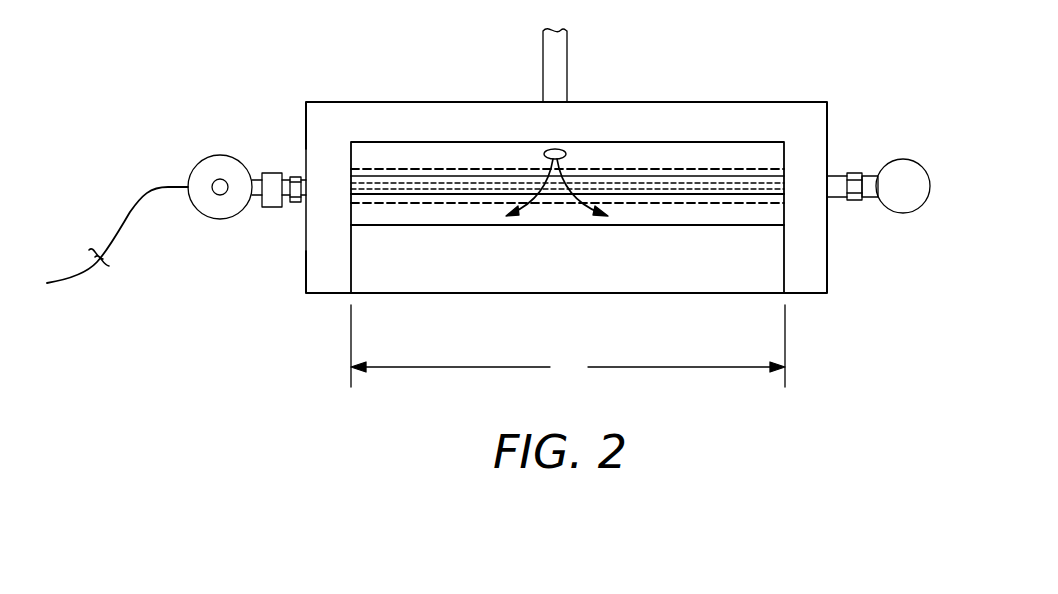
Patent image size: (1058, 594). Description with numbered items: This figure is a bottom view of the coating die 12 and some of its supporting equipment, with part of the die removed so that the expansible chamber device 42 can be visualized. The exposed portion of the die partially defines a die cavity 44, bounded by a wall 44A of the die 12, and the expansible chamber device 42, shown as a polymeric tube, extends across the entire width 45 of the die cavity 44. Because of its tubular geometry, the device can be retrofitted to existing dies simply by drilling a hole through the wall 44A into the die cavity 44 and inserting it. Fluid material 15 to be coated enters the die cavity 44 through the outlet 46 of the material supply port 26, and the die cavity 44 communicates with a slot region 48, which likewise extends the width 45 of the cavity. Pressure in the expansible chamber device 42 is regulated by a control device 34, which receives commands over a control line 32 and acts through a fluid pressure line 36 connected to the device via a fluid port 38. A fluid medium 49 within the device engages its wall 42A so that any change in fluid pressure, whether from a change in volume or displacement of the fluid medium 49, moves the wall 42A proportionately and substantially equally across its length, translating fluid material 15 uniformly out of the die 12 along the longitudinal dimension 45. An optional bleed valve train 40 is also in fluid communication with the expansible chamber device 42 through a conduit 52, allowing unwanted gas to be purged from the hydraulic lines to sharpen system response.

The die 12 is at (836, 99).
The fluid material 15 is at (550, 192).
The material supply port 26 is at (543, 58).
The control line 32 is at (135, 205).
The control device 34 is at (224, 155).
The fluid pressure line 36 is at (220, 195).
The fluid port 38 is at (305, 208).
The bleed valve train 40 is at (903, 158).
The expansible chamber device 42 is at (715, 178).
The wall 42A is at (675, 172).
The die cavity 44 is at (762, 153).
The wall 44A is at (313, 273).
The width 45 is at (568, 346).
The outlet 46 is at (568, 150).
The slot region 48 is at (706, 282).
The fluid medium 49 is at (407, 183).
The conduit 52 is at (853, 202).